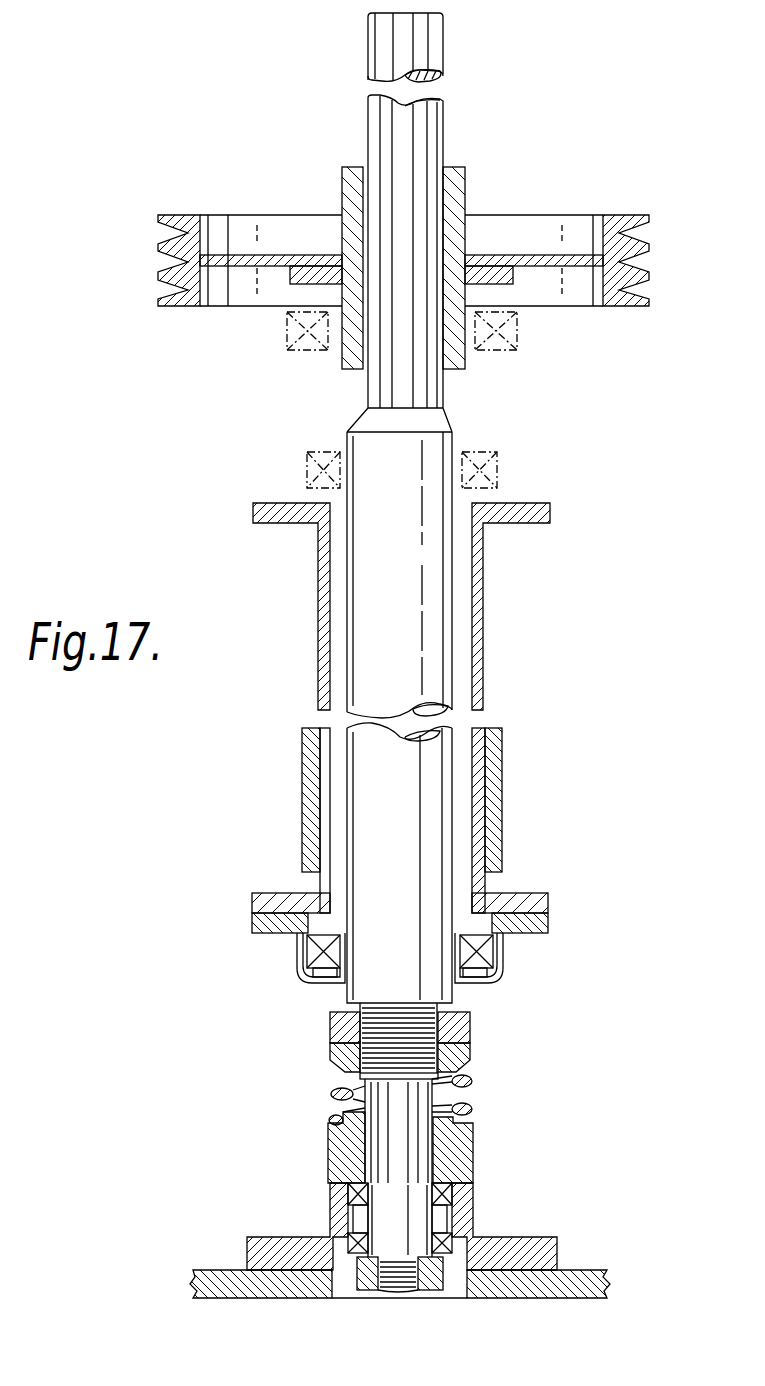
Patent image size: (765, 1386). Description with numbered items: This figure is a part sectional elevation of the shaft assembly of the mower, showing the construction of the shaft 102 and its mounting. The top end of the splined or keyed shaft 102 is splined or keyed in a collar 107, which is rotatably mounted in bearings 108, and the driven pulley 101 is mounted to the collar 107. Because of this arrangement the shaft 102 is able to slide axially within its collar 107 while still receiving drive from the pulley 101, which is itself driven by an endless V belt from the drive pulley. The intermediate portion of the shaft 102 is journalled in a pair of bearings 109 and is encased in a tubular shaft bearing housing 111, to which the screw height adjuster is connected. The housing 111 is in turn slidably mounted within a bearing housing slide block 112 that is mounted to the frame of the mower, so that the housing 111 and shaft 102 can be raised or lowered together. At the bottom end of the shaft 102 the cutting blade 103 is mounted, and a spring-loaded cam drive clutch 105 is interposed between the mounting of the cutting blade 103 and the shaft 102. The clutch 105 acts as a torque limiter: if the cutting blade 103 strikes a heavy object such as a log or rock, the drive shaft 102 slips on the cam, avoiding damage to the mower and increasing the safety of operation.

The driven pulley 101 is at (618, 215).
The shaft 102 is at (433, 43).
The cutting blade 103 is at (212, 1277).
The spring-loaded cam drive clutch 105 is at (463, 1155).
The collar 107 is at (352, 180).
The bearings 108 is at (290, 337).
The bearings 109 is at (312, 470).
The tubular shaft bearing housing 111 is at (483, 607).
The bearing housing slide block 112 is at (497, 793).